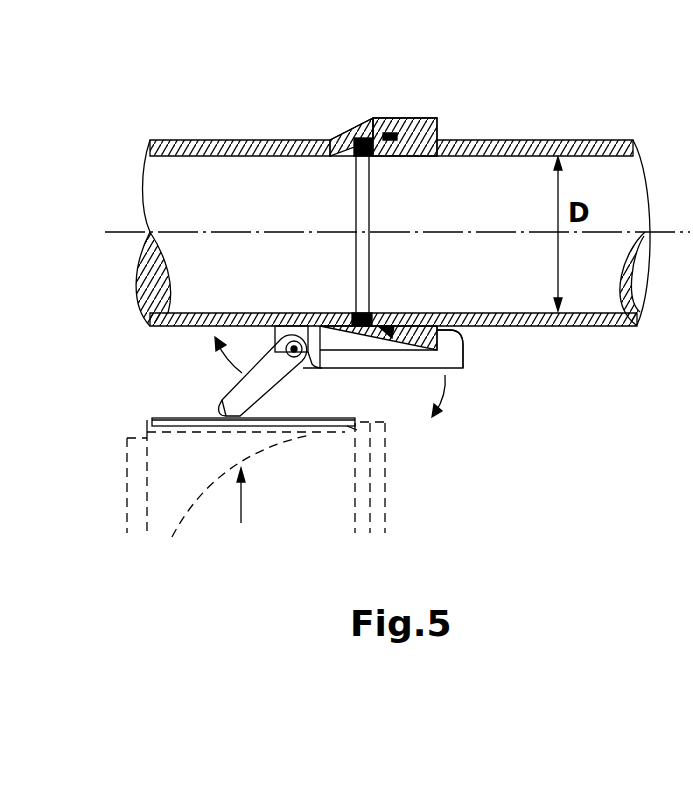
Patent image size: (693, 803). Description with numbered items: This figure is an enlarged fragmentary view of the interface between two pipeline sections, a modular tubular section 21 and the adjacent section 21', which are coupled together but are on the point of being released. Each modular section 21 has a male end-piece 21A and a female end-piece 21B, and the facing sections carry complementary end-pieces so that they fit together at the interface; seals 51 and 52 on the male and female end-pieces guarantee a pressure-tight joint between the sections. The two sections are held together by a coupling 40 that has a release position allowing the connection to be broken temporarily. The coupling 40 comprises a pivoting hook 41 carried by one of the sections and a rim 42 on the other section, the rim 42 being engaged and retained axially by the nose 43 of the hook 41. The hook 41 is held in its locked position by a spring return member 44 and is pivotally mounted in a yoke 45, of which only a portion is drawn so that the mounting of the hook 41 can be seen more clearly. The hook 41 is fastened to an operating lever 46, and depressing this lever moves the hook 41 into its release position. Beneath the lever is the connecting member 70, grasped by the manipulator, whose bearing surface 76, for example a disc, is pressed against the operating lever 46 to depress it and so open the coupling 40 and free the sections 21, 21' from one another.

The modular tubular section 21 is at (386, 192).
The adjacent tubular section 21' is at (543, 188).
The male end-piece 21A is at (385, 157).
The female end-piece 21B is at (337, 157).
The seal 51 is at (368, 140).
The seal 52 is at (410, 127).
The coupling 40 is at (324, 406).
The pivoting hook 41 is at (403, 371).
The rim 42 is at (463, 362).
The nose 43 is at (452, 333).
The spring return member 44 is at (308, 366).
The yoke 45 is at (270, 327).
The operating lever 46 is at (222, 394).
The connecting member 70 is at (385, 485).
The bearing surface 76 is at (347, 424).